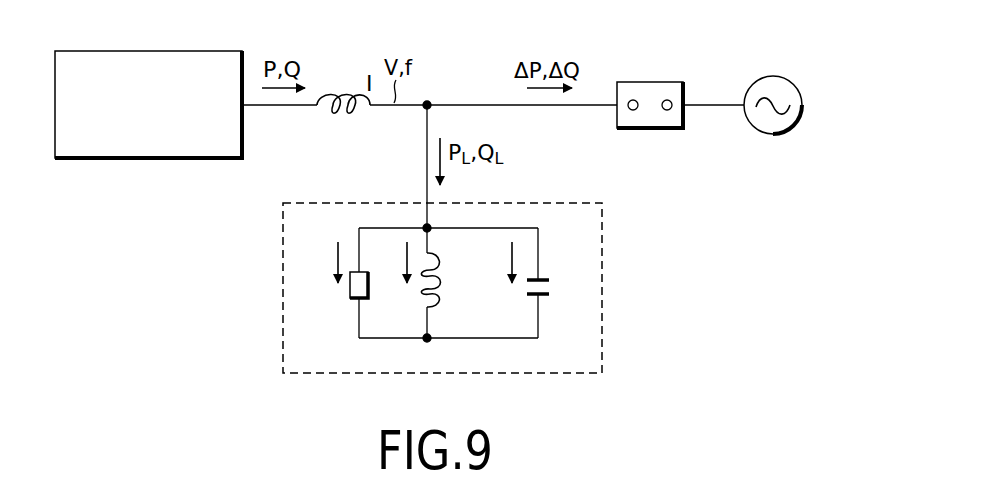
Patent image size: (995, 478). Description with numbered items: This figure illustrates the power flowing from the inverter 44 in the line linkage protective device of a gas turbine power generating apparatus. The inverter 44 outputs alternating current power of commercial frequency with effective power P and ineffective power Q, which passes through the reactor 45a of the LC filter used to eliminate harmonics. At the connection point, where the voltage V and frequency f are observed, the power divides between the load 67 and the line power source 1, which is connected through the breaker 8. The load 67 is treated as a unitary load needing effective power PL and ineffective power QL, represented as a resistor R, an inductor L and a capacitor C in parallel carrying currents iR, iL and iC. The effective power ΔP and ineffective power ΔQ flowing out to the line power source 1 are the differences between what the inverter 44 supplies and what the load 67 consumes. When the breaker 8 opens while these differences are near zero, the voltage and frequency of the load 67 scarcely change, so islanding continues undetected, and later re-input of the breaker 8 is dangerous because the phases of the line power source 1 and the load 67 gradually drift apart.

The inverter 44 is at (218, 55).
The reactor 45a is at (344, 92).
The breaker 8 is at (670, 84).
The line power source 1 is at (772, 81).
The load 67 is at (603, 279).